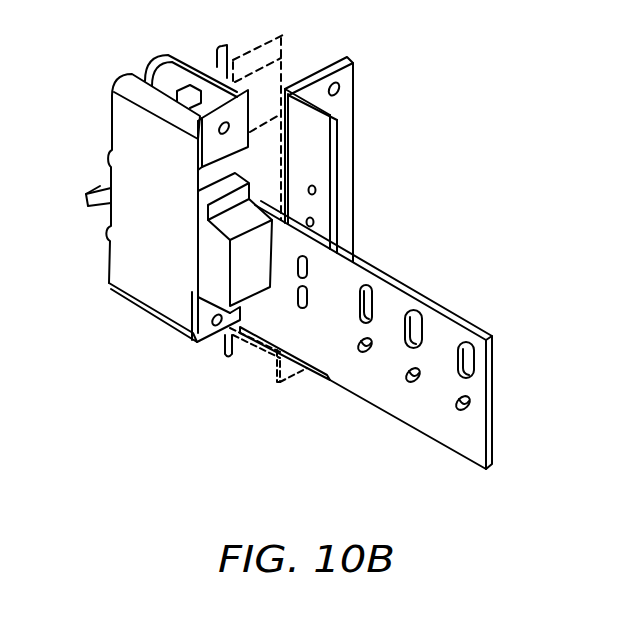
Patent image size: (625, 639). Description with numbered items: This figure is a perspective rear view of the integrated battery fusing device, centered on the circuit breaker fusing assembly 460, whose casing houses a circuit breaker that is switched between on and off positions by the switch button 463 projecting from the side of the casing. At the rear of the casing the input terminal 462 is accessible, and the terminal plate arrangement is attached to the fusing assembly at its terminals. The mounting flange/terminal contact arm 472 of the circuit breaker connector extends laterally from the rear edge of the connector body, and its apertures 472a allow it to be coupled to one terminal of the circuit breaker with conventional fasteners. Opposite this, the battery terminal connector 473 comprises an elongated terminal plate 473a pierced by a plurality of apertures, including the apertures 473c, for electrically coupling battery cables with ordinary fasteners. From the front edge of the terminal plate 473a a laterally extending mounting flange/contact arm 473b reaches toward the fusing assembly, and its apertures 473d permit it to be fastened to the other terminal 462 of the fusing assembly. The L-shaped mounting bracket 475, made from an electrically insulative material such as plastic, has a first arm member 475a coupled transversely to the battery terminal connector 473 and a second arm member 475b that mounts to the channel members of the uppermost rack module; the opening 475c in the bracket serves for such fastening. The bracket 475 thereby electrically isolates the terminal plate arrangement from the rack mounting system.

The circuit breaker fusing assembly 460 is at (44, 3).
The input terminal 462 is at (197, 105).
The switch button 463 is at (87, 199).
The mounting flange/terminal contact arm 472 is at (233, 54).
The apertures 472a is at (231, 128).
The battery terminal connector 473 is at (430, 304).
The elongated terminal plate 473a is at (385, 393).
The mounting flange/contact arm 473b is at (213, 340).
The mounting holes 473c is at (458, 374).
The apertures 473d is at (197, 333).
The mounting bracket 475 is at (353, 164).
The first arm member 475a is at (317, 160).
The second arm member 475b is at (350, 118).
The bracket hole 475c is at (342, 88).